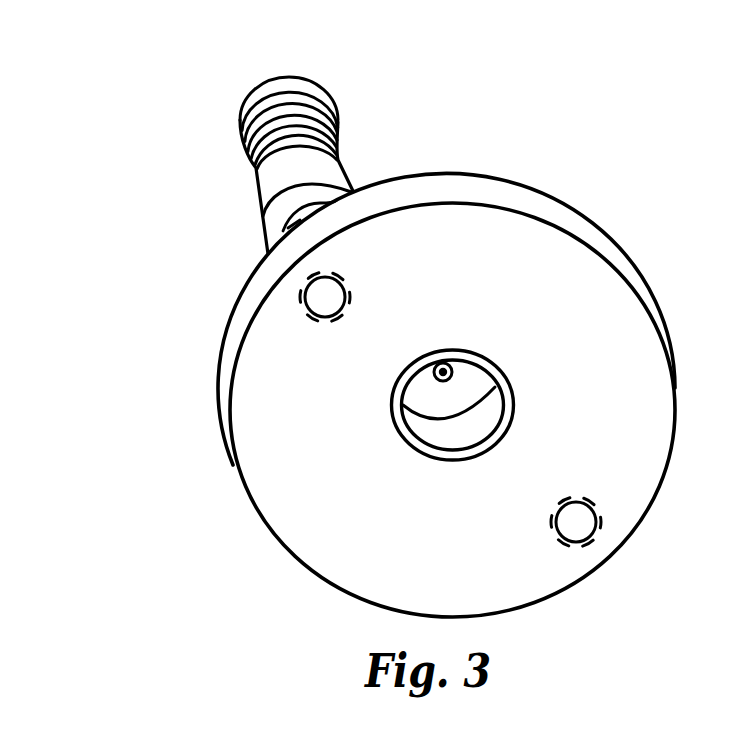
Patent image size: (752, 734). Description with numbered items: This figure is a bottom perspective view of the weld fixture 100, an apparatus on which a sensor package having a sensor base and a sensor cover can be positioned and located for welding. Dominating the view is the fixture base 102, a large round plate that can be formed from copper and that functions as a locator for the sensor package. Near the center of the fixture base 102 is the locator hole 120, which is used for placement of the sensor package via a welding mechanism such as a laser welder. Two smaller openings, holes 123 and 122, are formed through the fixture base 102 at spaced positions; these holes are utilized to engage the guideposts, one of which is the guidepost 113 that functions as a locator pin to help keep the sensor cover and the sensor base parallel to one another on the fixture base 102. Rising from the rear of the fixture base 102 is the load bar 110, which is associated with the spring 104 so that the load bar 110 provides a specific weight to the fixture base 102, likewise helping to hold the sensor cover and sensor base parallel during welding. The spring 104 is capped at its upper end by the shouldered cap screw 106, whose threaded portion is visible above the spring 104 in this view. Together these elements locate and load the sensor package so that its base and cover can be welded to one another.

The weld fixture 100 is at (122, 92).
The fixture base 102 is at (242, 327).
The spring 104 is at (251, 166).
The shouldered cap screw 106 is at (246, 102).
The load bar 110 is at (263, 215).
The guidepost 113 is at (285, 231).
The locator hole 120 is at (448, 427).
The hole 122 is at (586, 525).
The hole 123 is at (336, 292).